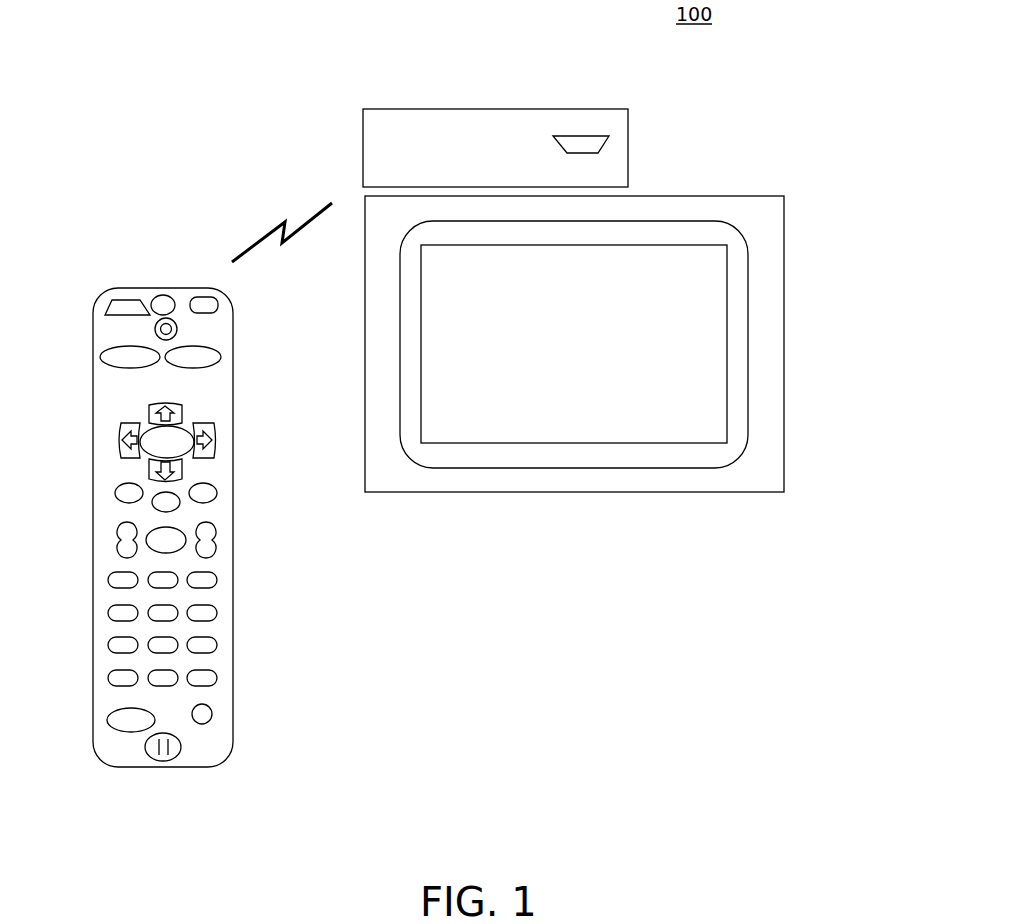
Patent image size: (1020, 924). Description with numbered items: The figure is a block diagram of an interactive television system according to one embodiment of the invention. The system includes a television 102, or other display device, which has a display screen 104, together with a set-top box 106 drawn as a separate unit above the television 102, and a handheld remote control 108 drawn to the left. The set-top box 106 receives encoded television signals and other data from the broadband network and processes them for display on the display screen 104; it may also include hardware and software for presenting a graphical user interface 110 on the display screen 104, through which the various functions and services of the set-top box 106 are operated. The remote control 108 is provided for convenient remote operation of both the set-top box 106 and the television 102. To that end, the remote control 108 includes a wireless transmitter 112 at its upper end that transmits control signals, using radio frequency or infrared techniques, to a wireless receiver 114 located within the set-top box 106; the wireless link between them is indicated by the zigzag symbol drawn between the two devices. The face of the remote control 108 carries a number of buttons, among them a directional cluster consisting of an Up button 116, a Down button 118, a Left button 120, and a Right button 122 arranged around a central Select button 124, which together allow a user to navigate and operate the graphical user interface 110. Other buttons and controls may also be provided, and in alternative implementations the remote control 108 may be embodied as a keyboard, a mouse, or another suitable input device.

The television 102 is at (784, 252).
The display screen 104 is at (748, 330).
The set-top box 106 is at (437, 108).
The remote control 108 is at (233, 618).
The graphical user interface 110 is at (727, 398).
The wireless transmitter 112 is at (122, 300).
The wireless receiver 114 is at (605, 139).
The Up button 116 is at (182, 415).
The Down button 118 is at (182, 468).
The Left button 120 is at (122, 440).
The Right button 122 is at (215, 442).
The Select button 124 is at (152, 457).